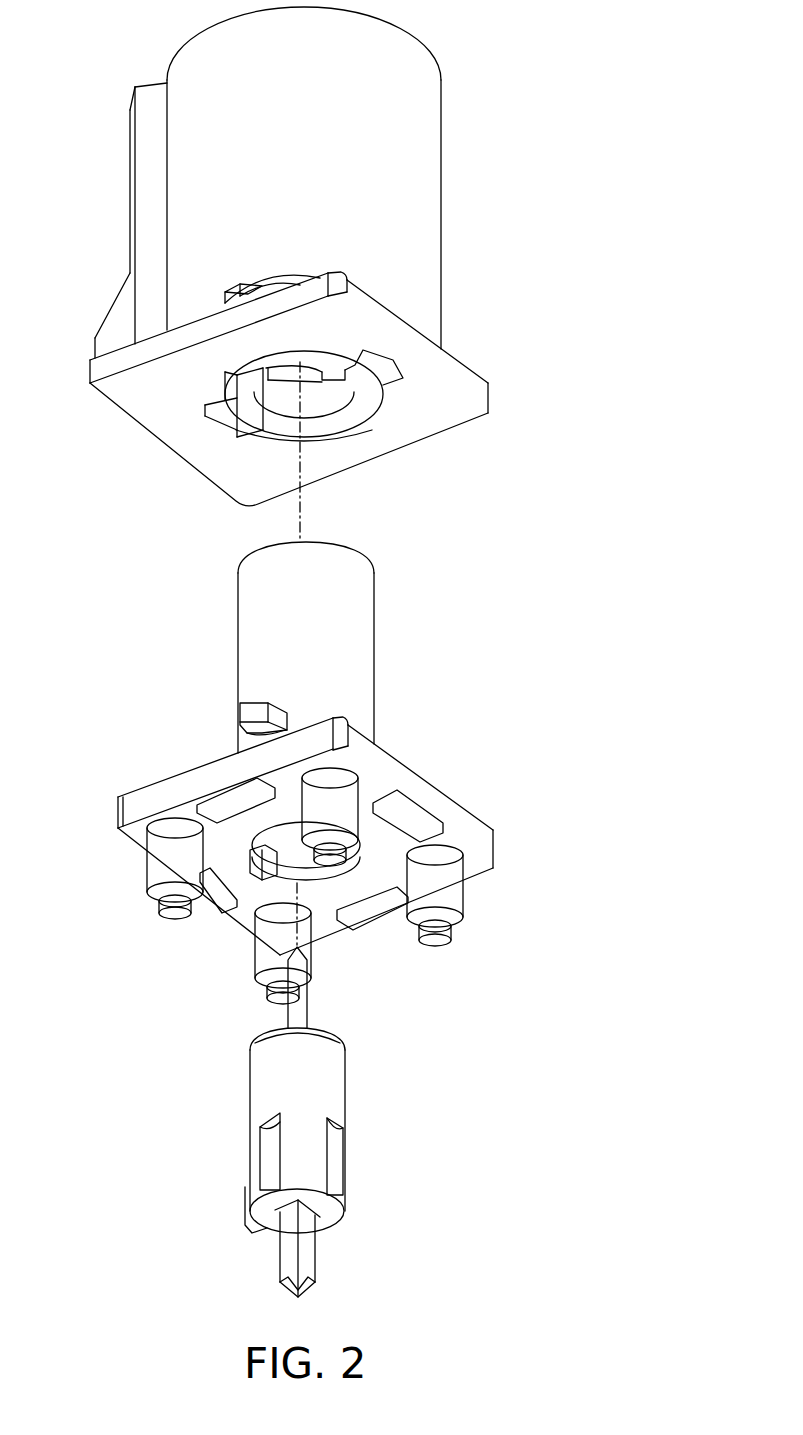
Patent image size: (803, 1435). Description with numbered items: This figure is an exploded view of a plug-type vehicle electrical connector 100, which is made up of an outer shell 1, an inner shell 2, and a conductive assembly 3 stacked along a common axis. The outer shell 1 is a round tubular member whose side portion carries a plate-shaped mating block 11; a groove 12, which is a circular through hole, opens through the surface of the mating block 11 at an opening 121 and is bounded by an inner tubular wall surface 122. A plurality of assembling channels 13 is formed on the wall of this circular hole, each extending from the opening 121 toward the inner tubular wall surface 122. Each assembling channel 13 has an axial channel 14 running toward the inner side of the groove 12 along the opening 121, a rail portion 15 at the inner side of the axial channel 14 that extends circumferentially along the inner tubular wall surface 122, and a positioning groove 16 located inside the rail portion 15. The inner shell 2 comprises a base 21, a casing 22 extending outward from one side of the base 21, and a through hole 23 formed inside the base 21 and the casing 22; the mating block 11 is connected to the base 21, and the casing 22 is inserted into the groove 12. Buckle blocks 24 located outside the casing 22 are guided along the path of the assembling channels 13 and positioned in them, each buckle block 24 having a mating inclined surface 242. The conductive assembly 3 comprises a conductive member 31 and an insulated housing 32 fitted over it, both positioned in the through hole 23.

The vehicle electrical connector 100 is at (41, 639).
The outer shell 1 is at (405, 178).
The mating block 11 is at (137, 383).
The groove 12 is at (353, 377).
The opening 121 is at (337, 433).
The inner tubular wall surface 122 is at (300, 360).
The assembling channels 13 is at (97, 488).
The axial channel 14 is at (243, 407).
The rail portion 15 is at (240, 372).
The positioning groove 16 is at (335, 372).
The inner shell 2 is at (238, 640).
The base 21 is at (137, 807).
The casing 22 is at (353, 662).
The through hole 23 is at (287, 857).
The buckle blocks 24 is at (243, 707).
The mating inclined surface 242 is at (262, 722).
The conductive assembly 3 is at (343, 1145).
The conductive member 31 is at (297, 1007).
The insulated housing 32 is at (263, 1097).